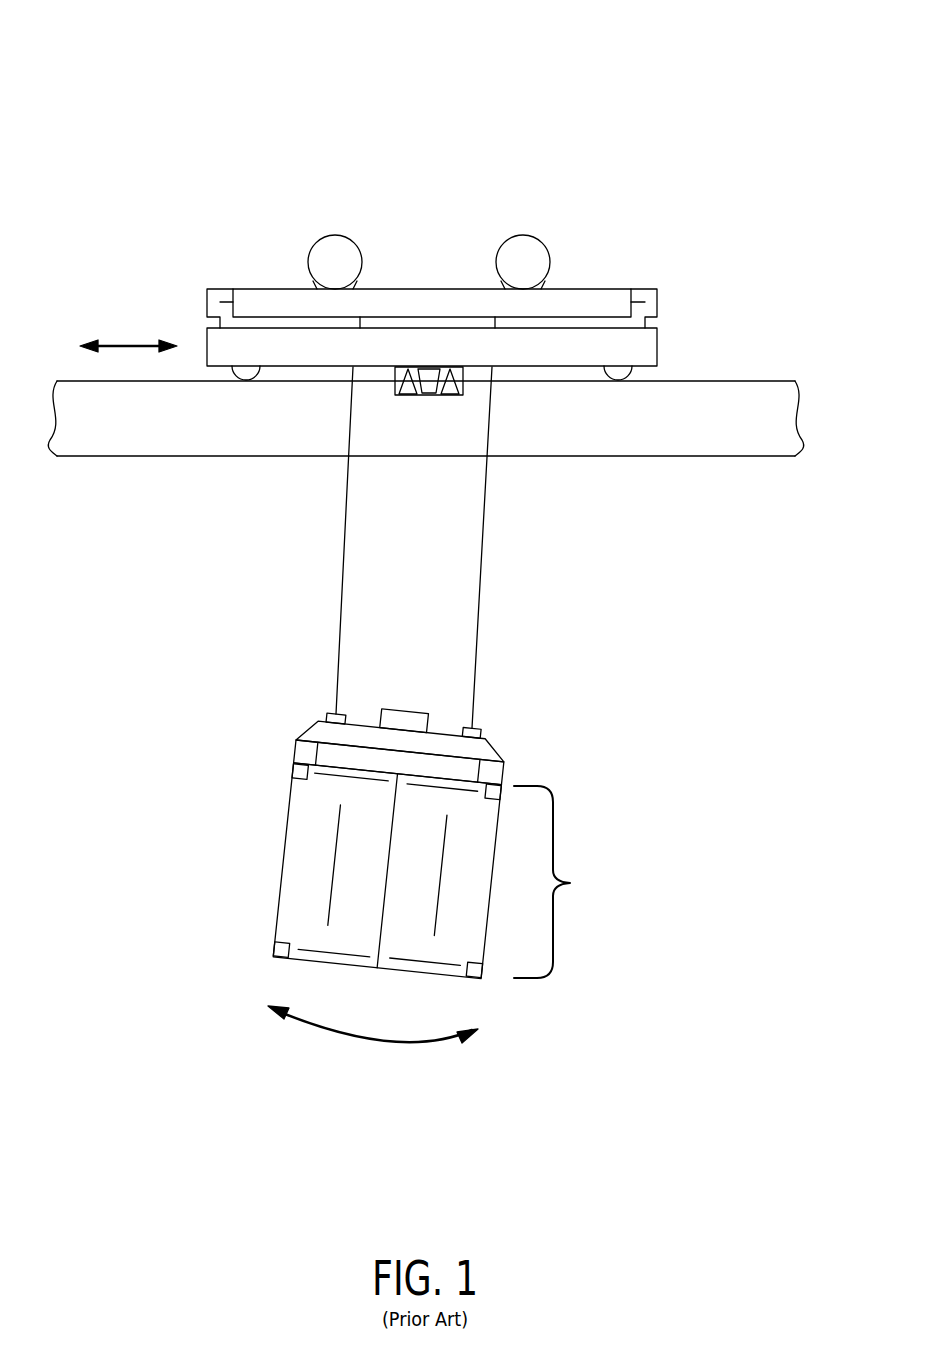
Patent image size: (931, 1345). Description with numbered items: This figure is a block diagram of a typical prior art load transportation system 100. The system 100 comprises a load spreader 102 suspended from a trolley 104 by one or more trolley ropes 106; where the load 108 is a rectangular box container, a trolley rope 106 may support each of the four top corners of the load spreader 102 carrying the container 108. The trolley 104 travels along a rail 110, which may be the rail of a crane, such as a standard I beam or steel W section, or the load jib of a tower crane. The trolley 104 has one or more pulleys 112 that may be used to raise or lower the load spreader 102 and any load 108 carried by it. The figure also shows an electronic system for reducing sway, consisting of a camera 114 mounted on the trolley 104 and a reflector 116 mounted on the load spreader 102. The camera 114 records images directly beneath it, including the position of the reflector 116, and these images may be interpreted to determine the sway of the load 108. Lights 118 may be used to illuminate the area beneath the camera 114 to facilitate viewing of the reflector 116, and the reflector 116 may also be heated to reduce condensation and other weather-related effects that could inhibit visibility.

The load transportation system 100 is at (128, 58).
The load spreader 102 is at (497, 748).
The trolley 104 is at (657, 347).
The trolley ropes 106 is at (345, 543).
The load 108 is at (566, 882).
The rail 110 is at (112, 456).
The pulleys 112 is at (313, 252).
The camera 114 is at (427, 395).
The reflector 116 is at (403, 708).
The lights 118 is at (405, 395).